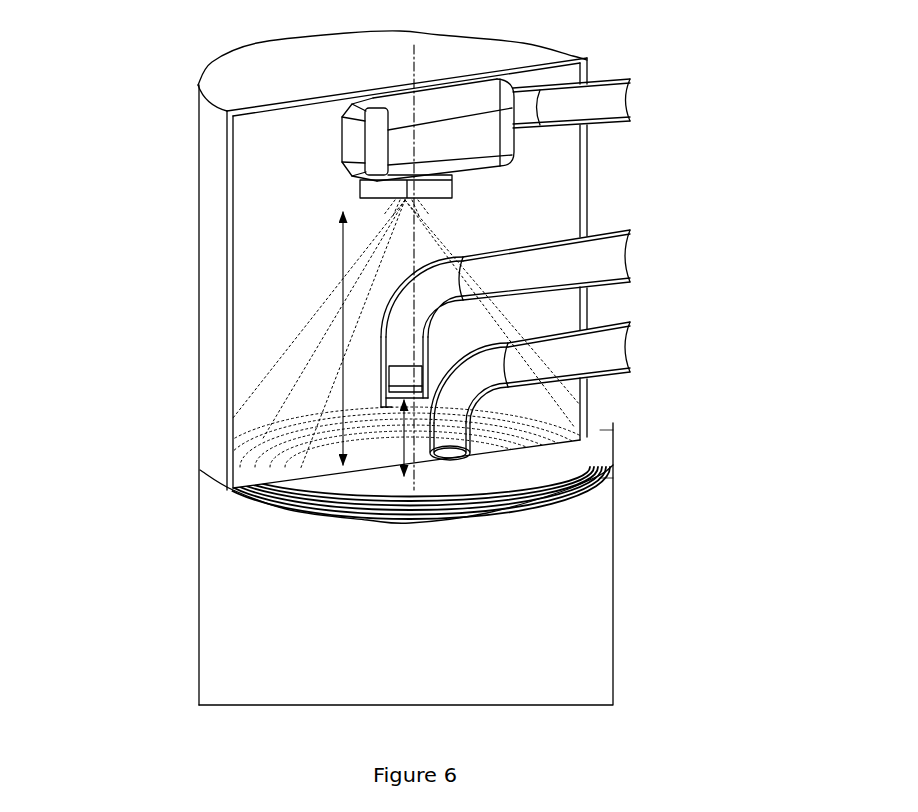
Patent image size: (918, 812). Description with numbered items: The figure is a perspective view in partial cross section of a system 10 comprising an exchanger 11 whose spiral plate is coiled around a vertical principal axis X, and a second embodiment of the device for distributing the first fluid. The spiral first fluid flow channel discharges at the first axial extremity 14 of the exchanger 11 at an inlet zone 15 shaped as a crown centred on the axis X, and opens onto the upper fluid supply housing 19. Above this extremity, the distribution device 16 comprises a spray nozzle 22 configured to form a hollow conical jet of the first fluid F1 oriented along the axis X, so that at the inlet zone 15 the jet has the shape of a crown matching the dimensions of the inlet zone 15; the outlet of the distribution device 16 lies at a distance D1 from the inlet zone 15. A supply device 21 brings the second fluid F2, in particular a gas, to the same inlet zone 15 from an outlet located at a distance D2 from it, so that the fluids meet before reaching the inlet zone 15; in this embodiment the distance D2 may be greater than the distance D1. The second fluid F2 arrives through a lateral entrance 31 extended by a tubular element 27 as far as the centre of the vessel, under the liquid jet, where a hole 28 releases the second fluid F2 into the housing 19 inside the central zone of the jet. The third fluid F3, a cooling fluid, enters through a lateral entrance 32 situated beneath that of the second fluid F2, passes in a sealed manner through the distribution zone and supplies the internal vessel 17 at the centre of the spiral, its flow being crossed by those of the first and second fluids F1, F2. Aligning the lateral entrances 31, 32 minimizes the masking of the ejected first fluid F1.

The system 10 is at (150, 76).
The exchanger 11 is at (226, 520).
The first axial extremity 14 is at (565, 480).
The inlet zone 15 is at (610, 427).
The distribution device 16 is at (388, 119).
The internal vessel 17 is at (482, 468).
The upper fluid supply housing 19 is at (217, 165).
The supply device 21 is at (380, 392).
The spray nozzle 22 is at (373, 190).
The tubular element 27 is at (400, 300).
The hole 28 is at (410, 367).
The lateral entrance 31 is at (612, 263).
The lateral entrance 32 is at (612, 337).
The principal axis X is at (401, 267).
The distance D1 is at (322, 338).
The distance D2 is at (379, 438).
The first fluid F1 is at (585, 108).
The second fluid F2 is at (495, 268).
The third fluid F3 is at (586, 359).